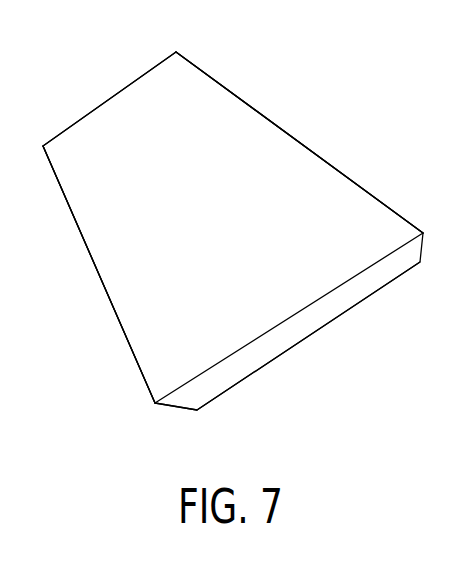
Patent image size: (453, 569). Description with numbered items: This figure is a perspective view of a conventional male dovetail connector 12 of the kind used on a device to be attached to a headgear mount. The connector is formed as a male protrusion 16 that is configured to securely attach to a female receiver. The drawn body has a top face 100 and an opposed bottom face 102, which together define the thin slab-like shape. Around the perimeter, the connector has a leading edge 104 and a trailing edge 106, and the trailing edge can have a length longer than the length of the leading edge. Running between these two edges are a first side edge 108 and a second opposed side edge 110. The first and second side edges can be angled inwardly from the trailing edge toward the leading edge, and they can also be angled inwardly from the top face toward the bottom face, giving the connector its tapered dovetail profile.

The dovetail connector 12 is at (355, 123).
The male protrusion 16 is at (255, 127).
The top face 100 is at (187, 236).
The bottom face 102 is at (338, 317).
The leading edge 104 is at (89, 113).
The trailing edge 106 is at (190, 393).
The first side edge 108 is at (102, 278).
The second opposed side edge 110 is at (340, 182).